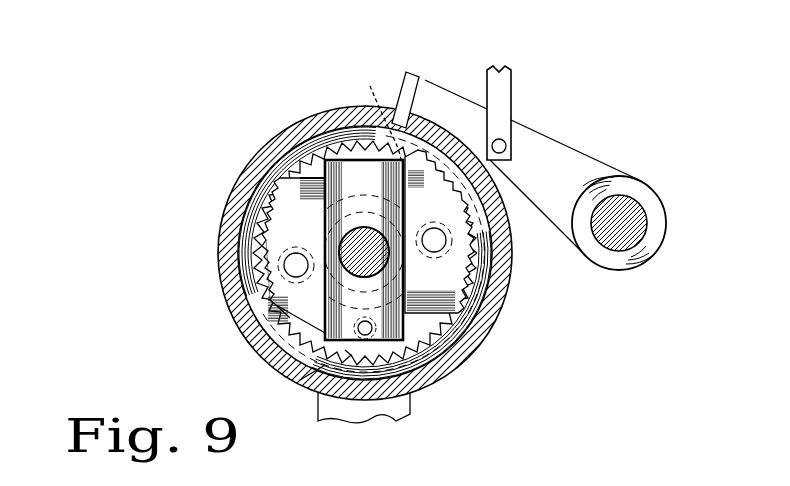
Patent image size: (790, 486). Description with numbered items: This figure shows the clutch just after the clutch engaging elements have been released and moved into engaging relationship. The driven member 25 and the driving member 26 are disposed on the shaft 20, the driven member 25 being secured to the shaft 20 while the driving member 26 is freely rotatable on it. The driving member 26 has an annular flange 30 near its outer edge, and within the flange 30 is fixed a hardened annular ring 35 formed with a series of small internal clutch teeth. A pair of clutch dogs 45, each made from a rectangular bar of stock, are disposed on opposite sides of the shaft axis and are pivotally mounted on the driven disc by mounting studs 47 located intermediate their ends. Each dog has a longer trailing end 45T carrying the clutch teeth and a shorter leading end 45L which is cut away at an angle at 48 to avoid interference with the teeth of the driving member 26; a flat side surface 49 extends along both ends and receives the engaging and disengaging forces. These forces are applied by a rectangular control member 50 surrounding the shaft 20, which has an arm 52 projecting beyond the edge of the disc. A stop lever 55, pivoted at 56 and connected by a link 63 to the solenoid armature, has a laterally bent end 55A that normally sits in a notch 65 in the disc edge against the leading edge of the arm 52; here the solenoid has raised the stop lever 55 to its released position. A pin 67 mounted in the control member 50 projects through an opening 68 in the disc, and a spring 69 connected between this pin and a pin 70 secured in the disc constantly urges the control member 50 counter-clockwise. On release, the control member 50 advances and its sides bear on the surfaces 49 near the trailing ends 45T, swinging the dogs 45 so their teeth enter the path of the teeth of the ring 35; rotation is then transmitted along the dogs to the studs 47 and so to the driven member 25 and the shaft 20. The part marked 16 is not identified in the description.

The mounting bracket 16 is at (400, 411).
The shaft 20 is at (366, 237).
The driven member 25 is at (333, 100).
The driving member 26 is at (216, 294).
The annular flange 30 is at (252, 154).
The annular ring 35 is at (282, 163).
The clutch dogs 45 is at (283, 203).
The trailing end of clutch dog 45T is at (306, 187).
The leading end of clutch dog 45L is at (427, 187).
The mounting studs 47 is at (291, 270).
The angular cut-away 48 is at (272, 326).
The flat side surface 49 is at (299, 252).
The control member 50 is at (306, 378).
The arm 52 is at (378, 158).
The stop lever 55 is at (532, 138).
The laterally bent end of stop lever 55A is at (408, 72).
The pivot 56 is at (666, 210).
The link 63 is at (504, 80).
The notch 65 is at (378, 117).
The pin 67 is at (366, 347).
The opening 68 is at (348, 355).
The spring 69 is at (480, 308).
The pin 70 is at (478, 281).